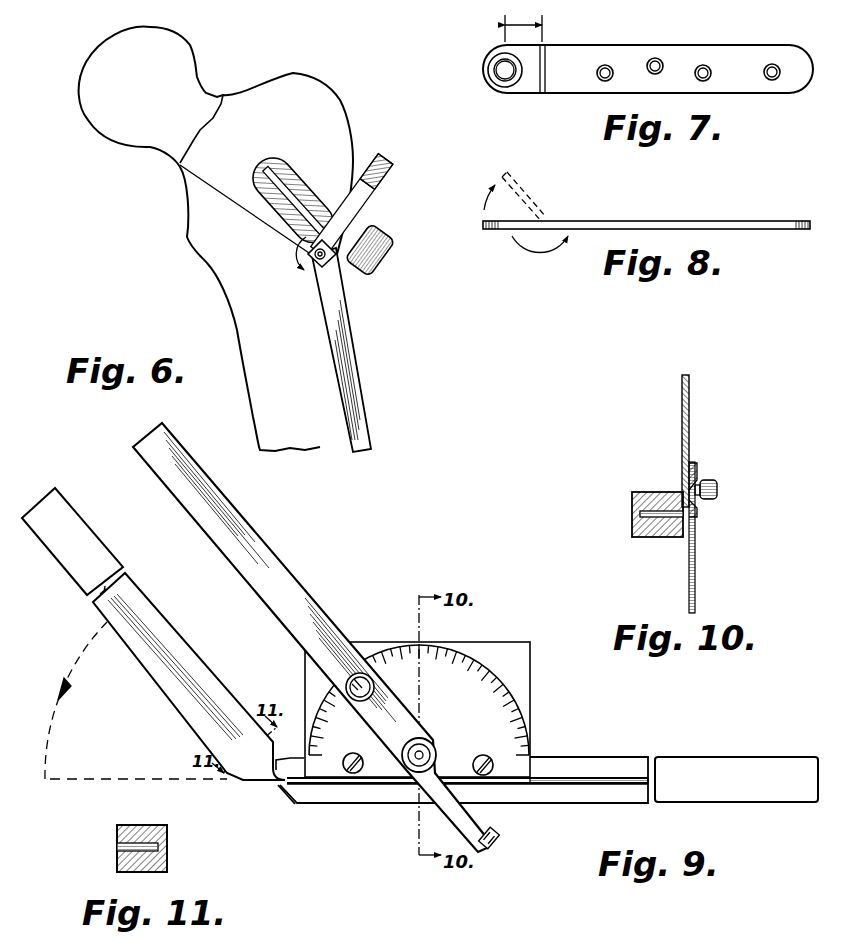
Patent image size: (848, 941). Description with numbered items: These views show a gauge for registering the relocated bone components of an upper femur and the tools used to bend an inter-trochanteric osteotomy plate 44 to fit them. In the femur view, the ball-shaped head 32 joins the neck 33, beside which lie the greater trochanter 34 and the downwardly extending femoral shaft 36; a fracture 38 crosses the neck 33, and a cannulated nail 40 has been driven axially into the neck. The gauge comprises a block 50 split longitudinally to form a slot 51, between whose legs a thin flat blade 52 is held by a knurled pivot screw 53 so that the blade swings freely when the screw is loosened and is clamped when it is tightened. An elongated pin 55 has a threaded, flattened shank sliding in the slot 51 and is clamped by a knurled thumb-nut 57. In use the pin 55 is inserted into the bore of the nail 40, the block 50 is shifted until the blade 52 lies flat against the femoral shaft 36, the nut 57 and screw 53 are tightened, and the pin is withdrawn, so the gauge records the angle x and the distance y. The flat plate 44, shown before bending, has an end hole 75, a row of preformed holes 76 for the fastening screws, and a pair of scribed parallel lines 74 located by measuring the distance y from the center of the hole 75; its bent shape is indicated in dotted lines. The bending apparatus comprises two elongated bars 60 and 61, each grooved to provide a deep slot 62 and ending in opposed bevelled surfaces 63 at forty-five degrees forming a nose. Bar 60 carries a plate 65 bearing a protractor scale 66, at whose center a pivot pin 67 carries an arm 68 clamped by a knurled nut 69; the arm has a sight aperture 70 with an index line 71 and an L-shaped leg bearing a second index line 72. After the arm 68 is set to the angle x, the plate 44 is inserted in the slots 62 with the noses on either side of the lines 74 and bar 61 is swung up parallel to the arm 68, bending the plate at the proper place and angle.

In FIG. 6, the head 32 is at (96, 72).
In FIG. 6, the neck 33 is at (208, 88).
In FIG. 6, the greater trochanter 34 is at (330, 106).
In FIG. 6, the femoral shaft 36 is at (268, 420).
In FIG. 6, the fracture 38 is at (200, 118).
In FIG. 6, the nail 40 is at (298, 176).
In FIG. 6, the pin 55 is at (273, 162).
In FIG. 6, the block 50 is at (393, 175).
In FIG. 6, the slot 51 is at (366, 210).
In FIG. 6, the blade 52 is at (352, 362).
In FIG. 6, the pivot screw 53 is at (330, 266).
In FIG. 6, the thumb-nut 57 is at (386, 264).
In FIG. 7, the inter-trochanteric osteotomy plate 44 is at (690, 56).
In FIG. 8, the inter-trochanteric osteotomy plate 44 is at (638, 220).
In FIG. 9, the inter-trochanteric osteotomy plate 44 is at (322, 786).
In FIG. 10, the inter-trochanteric osteotomy plate 44 is at (632, 516).
In FIG. 11, the inter-trochanteric osteotomy plate 44 is at (117, 848).
In FIG. 7, the parallel lines 74 is at (547, 68).
In FIG. 7, the hole 75 is at (505, 82).
In FIG. 7, the holes 76 is at (650, 63).
In FIG. 9, the bar 60 is at (718, 762).
In FIG. 10, the bar 60 is at (648, 537).
In FIG. 9, the bar 61 is at (87, 543).
In FIG. 9, the slot 62 is at (160, 647).
In FIG. 11, the slot 62 is at (167, 862).
In FIG. 9, the bevelled surfaces 63 is at (283, 768).
In FIG. 9, the plate 65 is at (509, 643).
In FIG. 9, the protractor scale 66 is at (530, 740).
In FIG. 9, the pivot pin 67 is at (412, 770).
In FIG. 10, the pivot pin 67 is at (718, 488).
In FIG. 9, the arm 68 is at (253, 552).
In FIG. 10, the arm 68 is at (690, 423).
In FIG. 9, the knurled nut 69 is at (430, 746).
In FIG. 10, the knurled nut 69 is at (706, 501).
In FIG. 9, the sight aperture 70 is at (345, 683).
In FIG. 9, the index line 71 is at (350, 678).
In FIG. 9, the second index line 72 is at (496, 846).